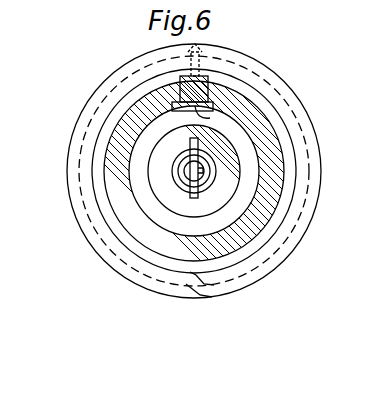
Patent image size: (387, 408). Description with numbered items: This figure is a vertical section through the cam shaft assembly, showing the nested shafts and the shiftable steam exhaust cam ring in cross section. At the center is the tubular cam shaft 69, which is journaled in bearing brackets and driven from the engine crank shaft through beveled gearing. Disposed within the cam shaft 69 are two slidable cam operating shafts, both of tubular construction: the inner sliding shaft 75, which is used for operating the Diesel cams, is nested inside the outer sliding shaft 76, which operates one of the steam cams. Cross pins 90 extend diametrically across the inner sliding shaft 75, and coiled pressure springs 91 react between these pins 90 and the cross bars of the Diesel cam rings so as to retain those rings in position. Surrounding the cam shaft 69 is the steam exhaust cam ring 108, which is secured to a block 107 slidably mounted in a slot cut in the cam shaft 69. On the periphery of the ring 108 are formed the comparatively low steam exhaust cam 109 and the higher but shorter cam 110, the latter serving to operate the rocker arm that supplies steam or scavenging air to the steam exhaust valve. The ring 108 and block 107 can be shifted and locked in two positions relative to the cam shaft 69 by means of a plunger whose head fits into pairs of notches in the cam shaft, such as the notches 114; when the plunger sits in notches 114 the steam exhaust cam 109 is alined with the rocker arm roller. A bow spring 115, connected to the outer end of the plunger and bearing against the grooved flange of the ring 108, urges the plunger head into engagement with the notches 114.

The tubular cam shaft 69 is at (386, 151).
The inner sliding cam operating shaft 75 is at (188, 166).
The outer sliding cam operating shaft 76 is at (200, 203).
The cross pin 90 is at (197, 201).
The coiled pressure spring 91 is at (178, 181).
The block 107 is at (182, 84).
The steam exhaust cam ring 108 is at (84, 116).
The steam exhaust cam 109 is at (144, 268).
The cam 110 is at (200, 286).
The notch 114 is at (216, 120).
The bow spring 115 is at (205, 41).